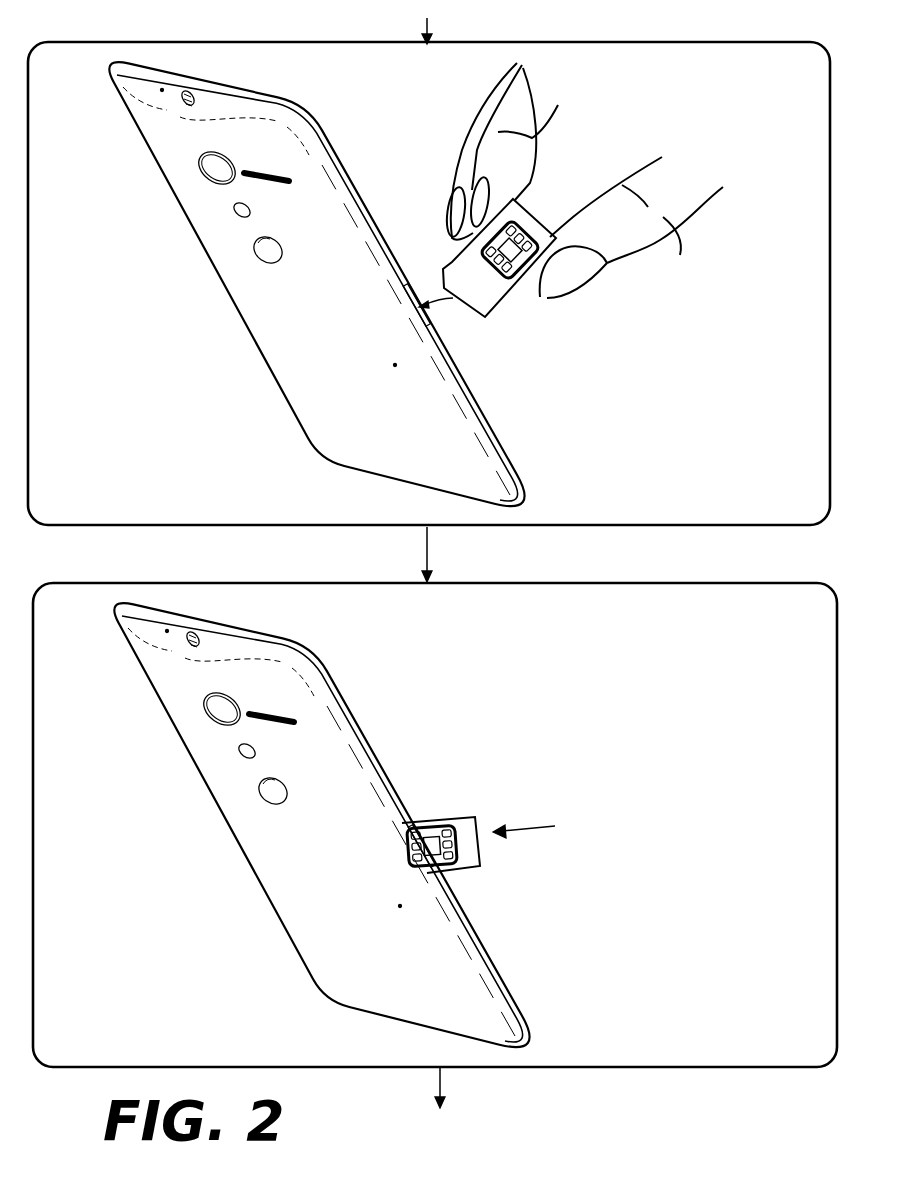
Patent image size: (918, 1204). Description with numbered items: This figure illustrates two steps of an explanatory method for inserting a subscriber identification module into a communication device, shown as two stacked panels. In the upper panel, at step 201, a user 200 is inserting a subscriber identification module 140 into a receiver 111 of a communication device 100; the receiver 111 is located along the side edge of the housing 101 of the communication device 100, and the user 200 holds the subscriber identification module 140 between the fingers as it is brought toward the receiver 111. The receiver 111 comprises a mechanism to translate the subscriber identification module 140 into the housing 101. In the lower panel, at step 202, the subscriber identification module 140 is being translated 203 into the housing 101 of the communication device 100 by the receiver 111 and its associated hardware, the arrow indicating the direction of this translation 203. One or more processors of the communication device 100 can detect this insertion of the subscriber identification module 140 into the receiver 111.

The communication device 100 is at (170, 137).
The housing 101 is at (327, 357).
The receiver 111 is at (400, 278).
The subscriber identification module 140 is at (480, 296).
The user 200 is at (680, 255).
The step 201 is at (829, 367).
The step 202 is at (836, 907).
The translation 203 is at (530, 832).